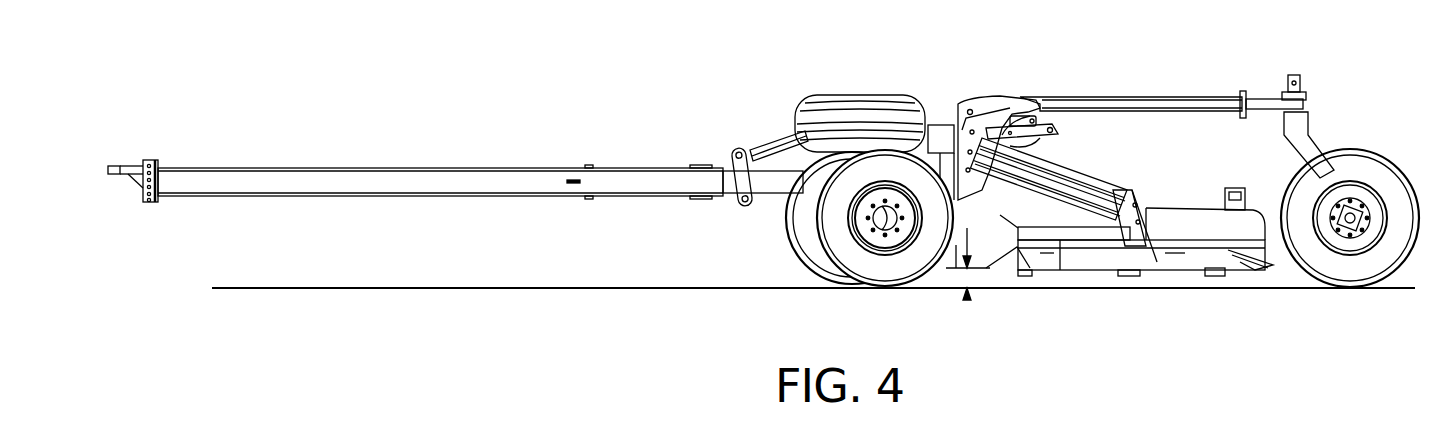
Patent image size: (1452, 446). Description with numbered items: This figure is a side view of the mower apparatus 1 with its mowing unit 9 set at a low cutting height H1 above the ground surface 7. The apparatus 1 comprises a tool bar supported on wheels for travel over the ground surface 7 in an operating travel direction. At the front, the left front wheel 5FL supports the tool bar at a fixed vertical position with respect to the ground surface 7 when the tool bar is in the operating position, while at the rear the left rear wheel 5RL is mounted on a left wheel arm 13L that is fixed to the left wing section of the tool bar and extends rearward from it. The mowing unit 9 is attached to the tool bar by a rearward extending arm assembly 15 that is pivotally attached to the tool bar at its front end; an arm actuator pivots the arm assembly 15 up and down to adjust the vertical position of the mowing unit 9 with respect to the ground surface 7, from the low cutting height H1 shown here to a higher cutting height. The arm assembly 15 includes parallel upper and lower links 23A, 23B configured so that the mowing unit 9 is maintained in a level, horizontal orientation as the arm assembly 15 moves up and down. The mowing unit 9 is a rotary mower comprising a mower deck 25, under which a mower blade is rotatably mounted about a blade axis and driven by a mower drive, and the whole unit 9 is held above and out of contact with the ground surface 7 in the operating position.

The mower apparatus 1 is at (531, 116).
The ground surface 7 is at (543, 287).
The left front wheel 5FL is at (787, 255).
The left rear wheel 5RL is at (1355, 150).
The left wheel arm 13L is at (1193, 97).
The arm assembly 15 is at (1084, 163).
The upper link 23A is at (1118, 180).
The lower link 23B is at (998, 188).
The mowing unit 9 is at (1198, 270).
The mower deck 25 is at (1263, 262).
The low cutting height H1 is at (967, 300).